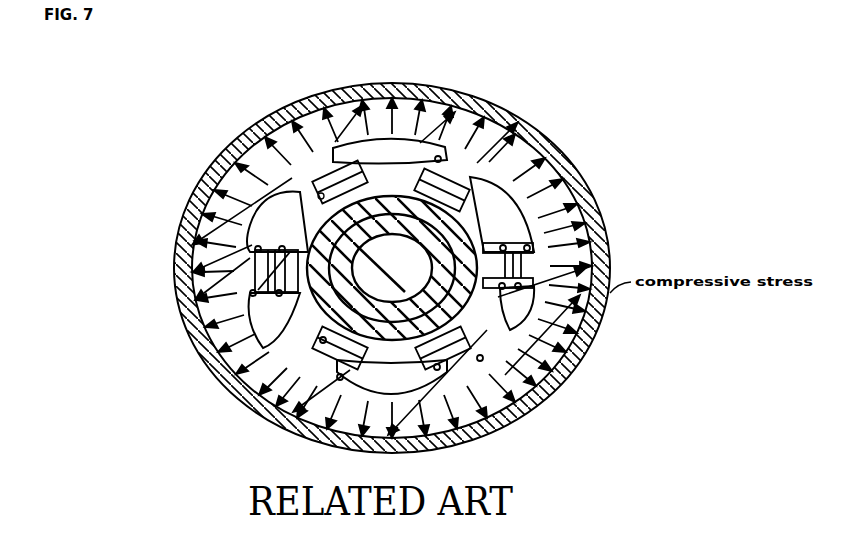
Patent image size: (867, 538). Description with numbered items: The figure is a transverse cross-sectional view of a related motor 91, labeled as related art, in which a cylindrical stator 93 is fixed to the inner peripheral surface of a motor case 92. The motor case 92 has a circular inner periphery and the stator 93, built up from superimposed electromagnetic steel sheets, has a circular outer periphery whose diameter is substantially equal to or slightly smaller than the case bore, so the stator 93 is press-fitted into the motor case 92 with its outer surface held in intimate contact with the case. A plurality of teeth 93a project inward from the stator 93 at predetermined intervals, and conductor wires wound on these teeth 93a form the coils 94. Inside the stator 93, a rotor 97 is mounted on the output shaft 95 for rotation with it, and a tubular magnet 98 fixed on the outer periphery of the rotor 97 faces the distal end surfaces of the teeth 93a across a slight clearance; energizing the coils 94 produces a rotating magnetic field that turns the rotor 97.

The motor 91 is at (537, 124).
The motor case 92 is at (426, 86).
The stator 93 is at (350, 92).
The teeth 93a is at (346, 167).
The coils 94 is at (303, 194).
The output shaft 95 is at (319, 198).
The rotor 97 is at (383, 202).
The magnet 98 is at (464, 309).